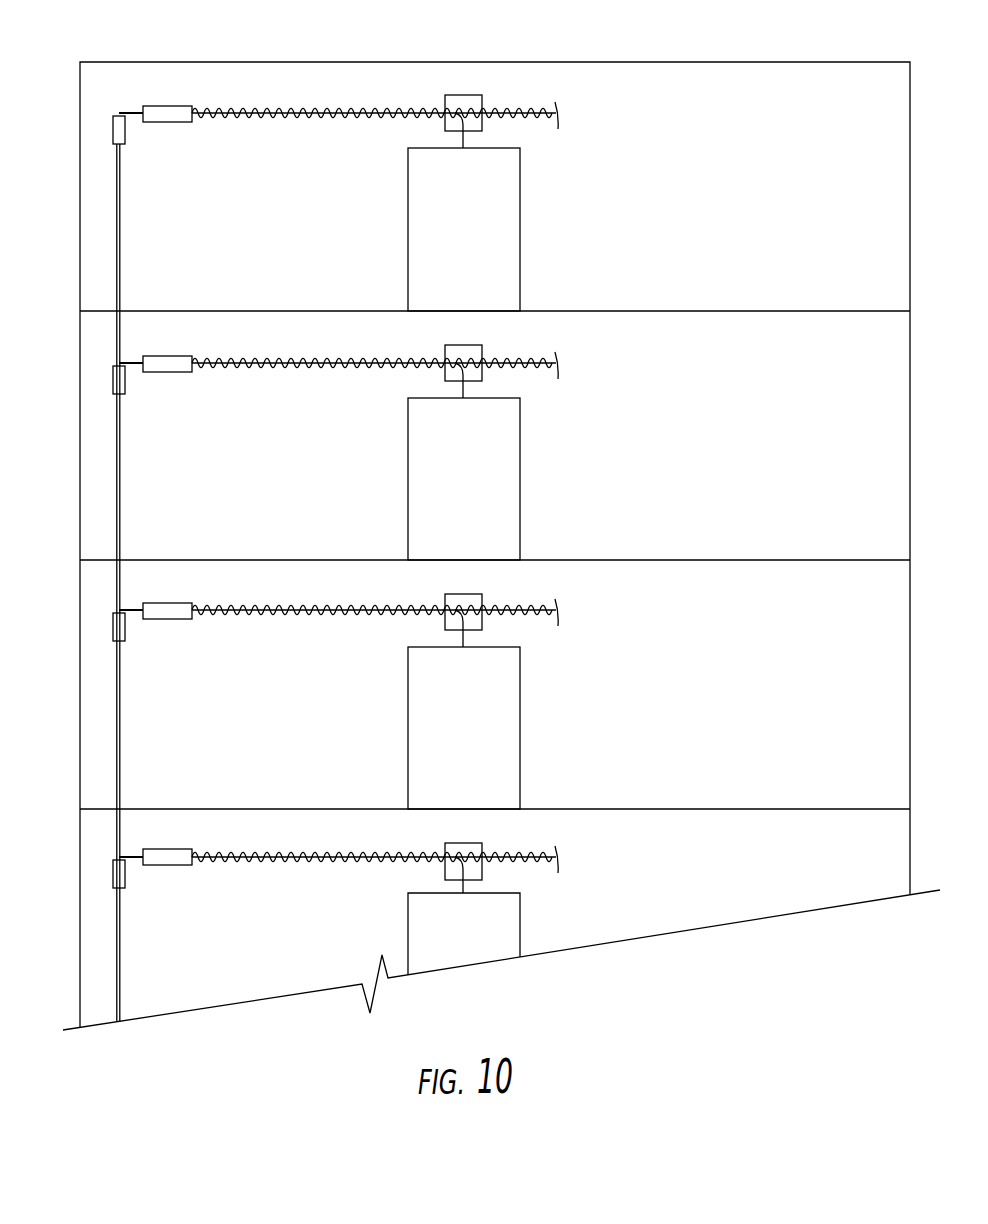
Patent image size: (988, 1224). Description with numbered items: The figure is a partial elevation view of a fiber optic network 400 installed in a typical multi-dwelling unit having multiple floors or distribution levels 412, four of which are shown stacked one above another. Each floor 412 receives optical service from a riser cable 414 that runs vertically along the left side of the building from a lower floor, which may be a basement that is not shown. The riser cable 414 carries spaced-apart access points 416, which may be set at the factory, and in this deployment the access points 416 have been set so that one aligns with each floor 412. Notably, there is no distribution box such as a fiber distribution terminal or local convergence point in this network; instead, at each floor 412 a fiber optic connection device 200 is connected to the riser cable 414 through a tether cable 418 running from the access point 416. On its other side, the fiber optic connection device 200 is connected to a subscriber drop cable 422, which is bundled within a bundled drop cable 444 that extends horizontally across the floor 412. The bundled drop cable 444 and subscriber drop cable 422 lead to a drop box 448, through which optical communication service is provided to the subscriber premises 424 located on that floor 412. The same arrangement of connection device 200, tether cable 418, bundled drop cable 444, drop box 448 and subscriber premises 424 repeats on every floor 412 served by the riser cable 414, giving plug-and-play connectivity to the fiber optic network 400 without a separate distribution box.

The fiber optic connection device 200 is at (153, 106).
The fiber optic network 400 is at (193, 62).
The floor 412 is at (93, 311).
The riser cable 414 is at (118, 222).
The access point 416 is at (113, 121).
The tether cable 418 is at (135, 111).
The subscriber drop cable 422 is at (467, 137).
The subscriber premises 424 is at (520, 215).
The bundled drop cable 444 is at (278, 110).
The drop box 448 is at (467, 95).